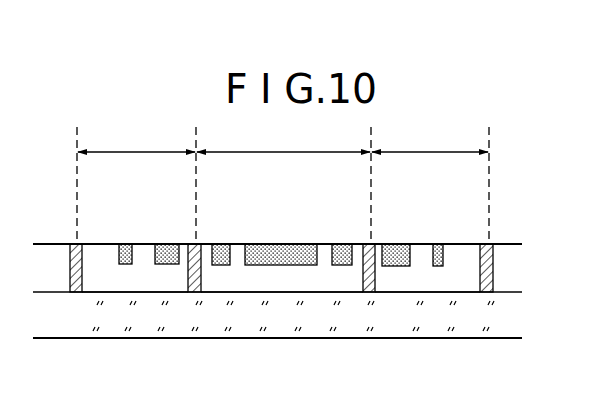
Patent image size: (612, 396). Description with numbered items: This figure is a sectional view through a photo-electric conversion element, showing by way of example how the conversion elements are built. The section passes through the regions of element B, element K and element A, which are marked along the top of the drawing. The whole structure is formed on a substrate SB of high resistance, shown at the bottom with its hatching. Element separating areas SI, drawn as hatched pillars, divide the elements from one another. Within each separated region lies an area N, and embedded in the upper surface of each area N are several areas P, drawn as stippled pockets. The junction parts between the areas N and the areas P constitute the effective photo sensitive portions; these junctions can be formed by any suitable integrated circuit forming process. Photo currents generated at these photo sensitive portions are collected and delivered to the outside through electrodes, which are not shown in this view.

The element B is at (136, 184).
The element K is at (284, 184).
The element A is at (430, 184).
The area P is at (125, 244).
The area N is at (281, 280).
The element separating area SI is at (493, 270).
The substrate SB is at (472, 333).